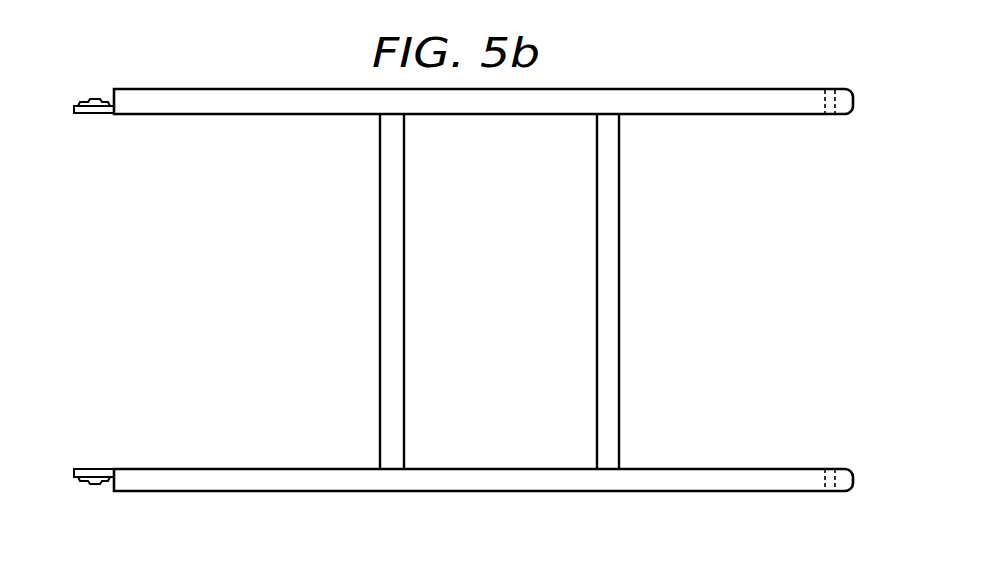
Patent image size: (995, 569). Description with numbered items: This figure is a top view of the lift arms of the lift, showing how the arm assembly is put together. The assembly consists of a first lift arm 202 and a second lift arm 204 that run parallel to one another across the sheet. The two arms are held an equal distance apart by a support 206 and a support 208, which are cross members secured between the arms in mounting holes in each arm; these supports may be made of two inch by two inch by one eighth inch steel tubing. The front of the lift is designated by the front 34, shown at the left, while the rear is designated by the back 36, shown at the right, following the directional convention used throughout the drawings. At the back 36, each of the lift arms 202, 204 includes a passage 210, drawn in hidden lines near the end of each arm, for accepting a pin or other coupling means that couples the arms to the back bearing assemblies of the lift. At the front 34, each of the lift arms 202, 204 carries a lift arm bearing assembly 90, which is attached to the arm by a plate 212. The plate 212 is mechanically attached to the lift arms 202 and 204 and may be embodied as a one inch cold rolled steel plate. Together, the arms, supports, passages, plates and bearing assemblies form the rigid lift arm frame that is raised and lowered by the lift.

The front 34 is at (86, 296).
The back 36 is at (856, 272).
The lift arm bearing assembly 90 is at (88, 99).
The first lift arm 202 is at (173, 465).
The second lift arm 204 is at (217, 117).
The support 206 is at (405, 340).
The support 208 is at (620, 343).
The passage 210 is at (830, 104).
The plate 212 is at (87, 115).